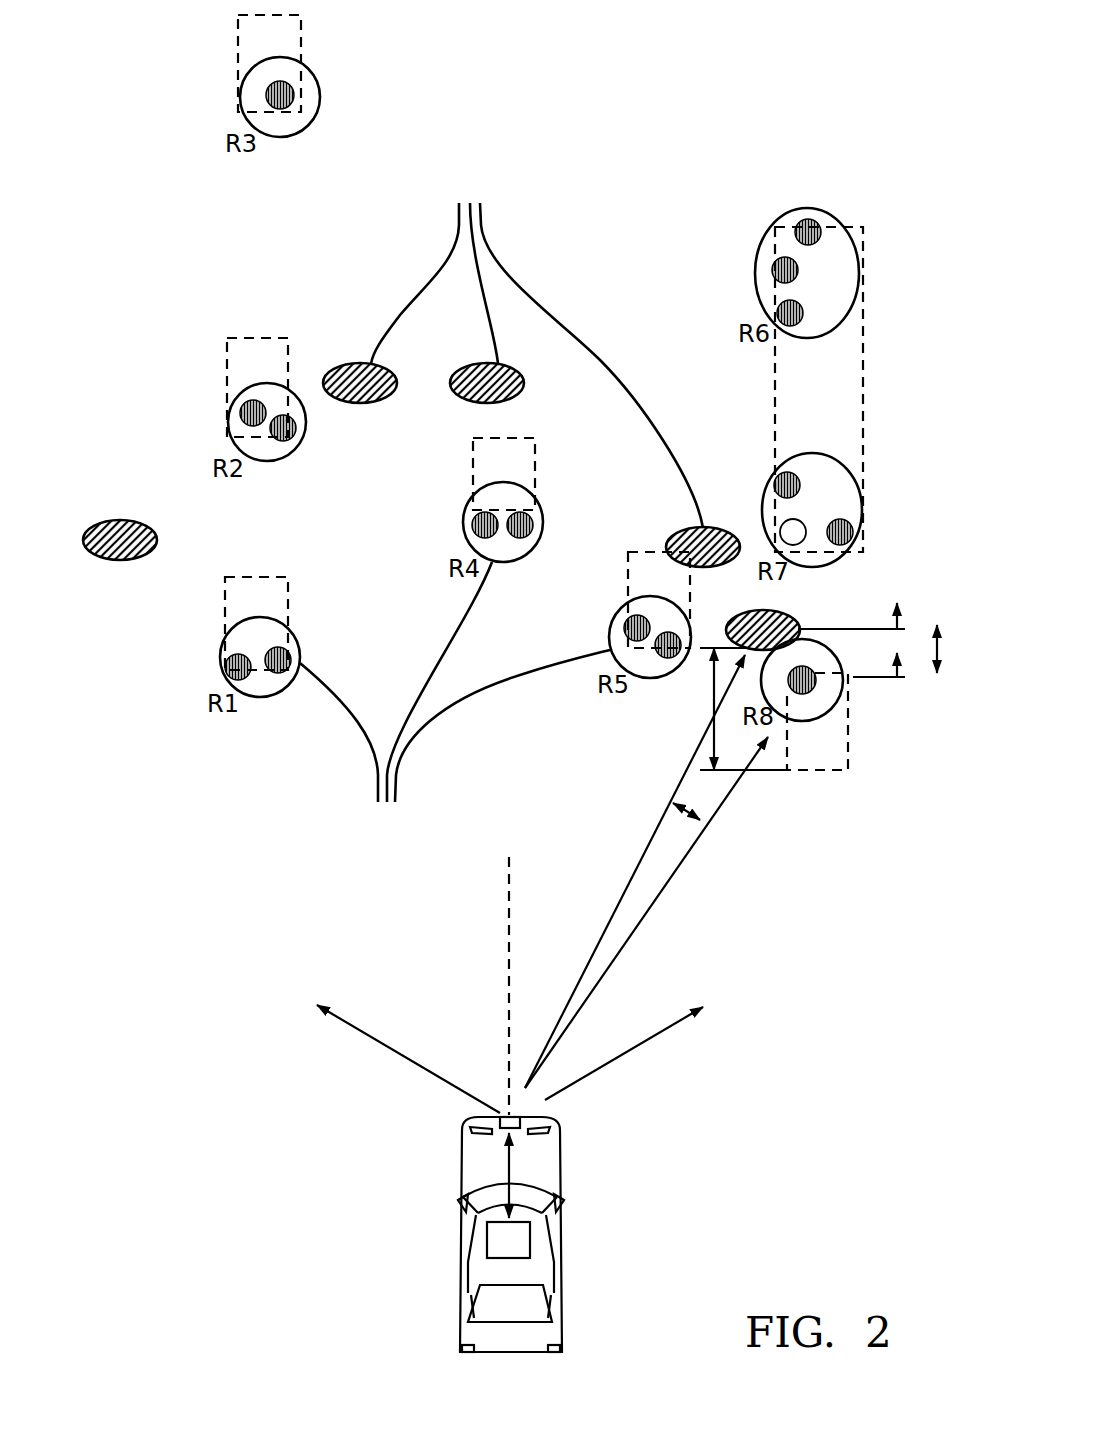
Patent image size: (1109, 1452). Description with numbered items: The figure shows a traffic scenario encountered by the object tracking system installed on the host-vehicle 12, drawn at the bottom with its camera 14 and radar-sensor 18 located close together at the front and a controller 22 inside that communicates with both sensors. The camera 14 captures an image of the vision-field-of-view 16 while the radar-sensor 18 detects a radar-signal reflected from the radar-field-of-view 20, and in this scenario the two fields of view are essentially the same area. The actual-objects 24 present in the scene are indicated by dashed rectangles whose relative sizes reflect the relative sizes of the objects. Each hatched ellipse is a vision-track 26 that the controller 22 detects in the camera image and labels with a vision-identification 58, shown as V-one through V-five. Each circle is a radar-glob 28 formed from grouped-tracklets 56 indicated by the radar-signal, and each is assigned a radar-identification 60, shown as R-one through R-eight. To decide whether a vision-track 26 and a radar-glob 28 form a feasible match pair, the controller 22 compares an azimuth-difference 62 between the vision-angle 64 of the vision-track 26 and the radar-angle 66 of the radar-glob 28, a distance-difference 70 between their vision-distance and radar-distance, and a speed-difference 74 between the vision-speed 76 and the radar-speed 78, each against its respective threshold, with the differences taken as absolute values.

The host-vehicle 12 is at (527, 1345).
The camera 14 is at (441, 1146).
The vision-field-of-view 16 is at (643, 987).
The radar-sensor 18 is at (492, 1133).
The radar-field-of-view 20 is at (637, 1017).
The controller 22 is at (533, 1235).
The actual-objects 24 is at (718, 73).
The vision-track 26 is at (150, 530).
The radar-glob 28 is at (310, 72).
The grouped-tracklets 56 is at (272, 82).
The vision-identification 58 is at (537, 350).
The radar-identification 60 is at (455, 698).
The azimuth-difference 62 is at (672, 812).
The vision-angle 64 is at (627, 887).
The radar-angle 66 is at (665, 892).
The distance-difference 70 is at (714, 697).
The speed-difference 74 is at (947, 648).
The vision-speed 76 is at (903, 628).
The radar-speed 78 is at (900, 684).